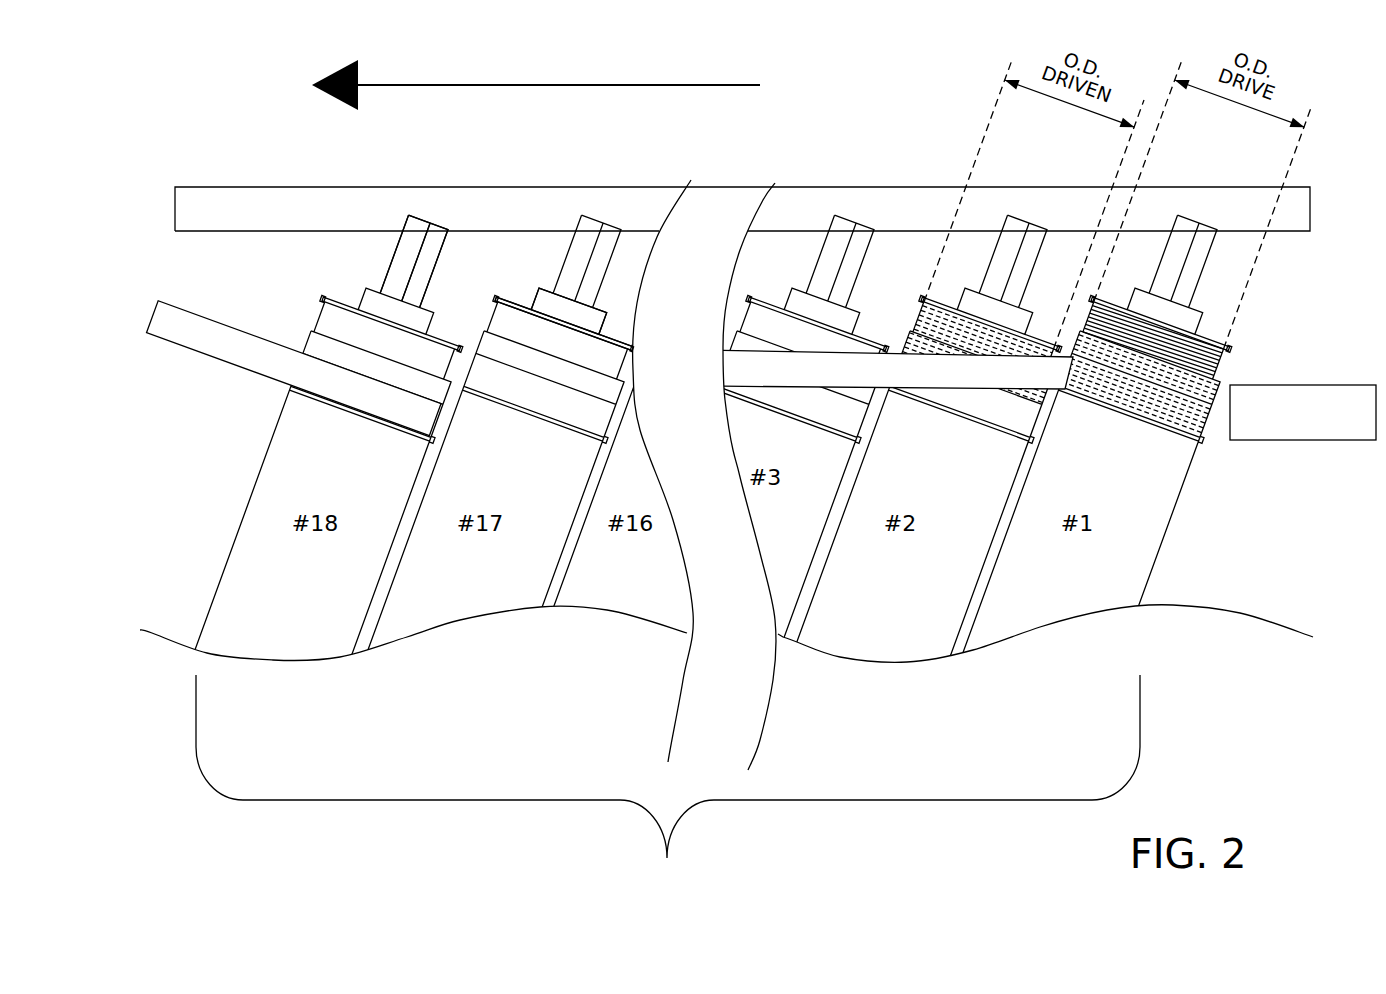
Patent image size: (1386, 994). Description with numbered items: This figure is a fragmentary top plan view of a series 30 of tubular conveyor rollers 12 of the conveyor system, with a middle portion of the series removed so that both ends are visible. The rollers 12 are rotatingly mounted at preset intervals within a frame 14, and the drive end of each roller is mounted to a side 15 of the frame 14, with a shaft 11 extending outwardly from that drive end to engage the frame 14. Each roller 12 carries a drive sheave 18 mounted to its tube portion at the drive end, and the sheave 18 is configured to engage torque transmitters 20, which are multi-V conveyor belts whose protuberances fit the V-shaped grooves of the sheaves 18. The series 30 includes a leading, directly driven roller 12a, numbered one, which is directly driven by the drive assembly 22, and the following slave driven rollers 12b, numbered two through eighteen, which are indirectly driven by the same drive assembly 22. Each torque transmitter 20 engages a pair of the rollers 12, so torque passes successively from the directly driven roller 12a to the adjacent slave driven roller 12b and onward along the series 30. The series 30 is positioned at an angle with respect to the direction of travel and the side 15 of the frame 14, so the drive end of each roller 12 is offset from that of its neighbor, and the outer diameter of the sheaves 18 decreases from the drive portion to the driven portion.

The shaft 11 is at (400, 258).
The torque transmitter 20 is at (500, 322).
The drive sheave 18 is at (325, 350).
The frame 14 is at (742, 171).
The side of the frame 15 is at (905, 215).
The tubular conveyor roller 12 is at (723, 475).
The directly driven roller 12a is at (1035, 614).
The slave driven roller 12b is at (271, 636).
The drive assembly 22 is at (1262, 442).
The series of rollers 30 is at (668, 782).